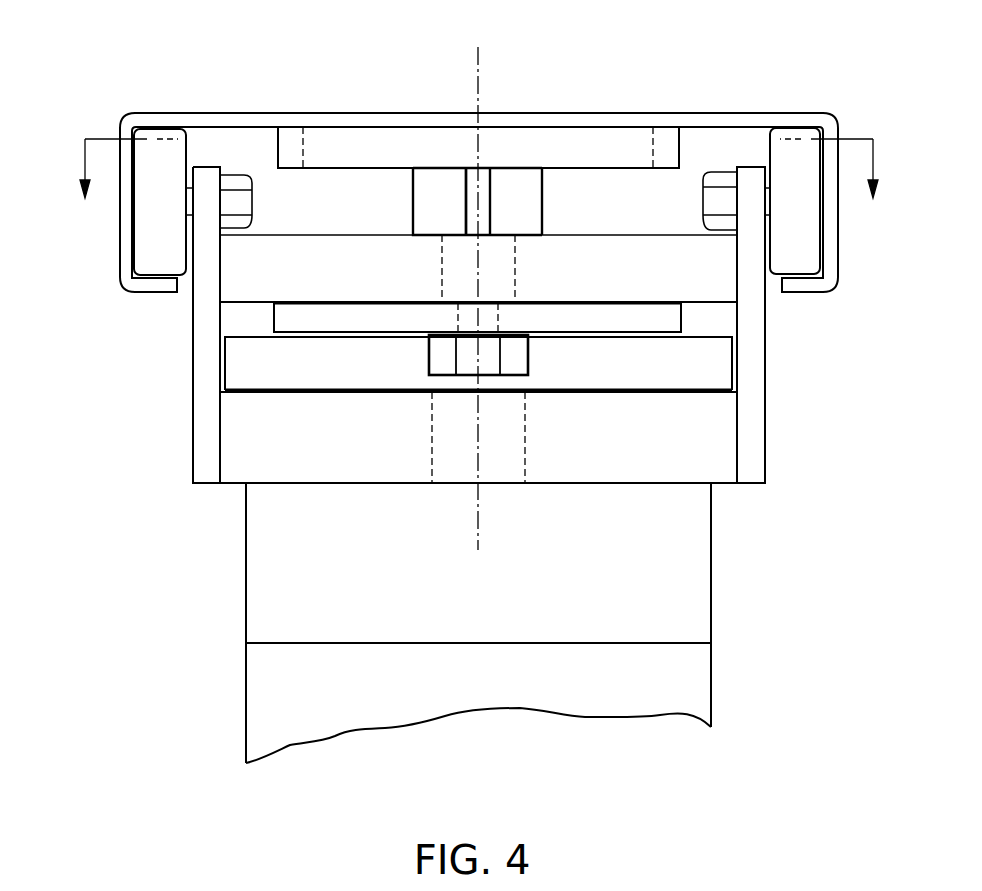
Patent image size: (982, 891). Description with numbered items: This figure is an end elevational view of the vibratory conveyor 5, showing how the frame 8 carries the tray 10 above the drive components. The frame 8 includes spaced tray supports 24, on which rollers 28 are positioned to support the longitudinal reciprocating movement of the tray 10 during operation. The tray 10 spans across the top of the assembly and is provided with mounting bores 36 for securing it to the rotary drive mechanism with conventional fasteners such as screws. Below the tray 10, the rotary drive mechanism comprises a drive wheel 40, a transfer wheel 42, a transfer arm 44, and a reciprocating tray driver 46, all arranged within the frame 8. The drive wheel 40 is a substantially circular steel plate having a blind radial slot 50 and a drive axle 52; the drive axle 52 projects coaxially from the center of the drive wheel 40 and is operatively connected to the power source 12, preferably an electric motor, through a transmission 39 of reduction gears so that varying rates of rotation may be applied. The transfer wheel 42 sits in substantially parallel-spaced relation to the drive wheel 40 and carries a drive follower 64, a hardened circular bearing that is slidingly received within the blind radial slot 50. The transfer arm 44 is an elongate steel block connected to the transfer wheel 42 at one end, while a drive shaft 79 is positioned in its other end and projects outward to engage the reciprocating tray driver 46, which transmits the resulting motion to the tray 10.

The tray 10 is at (363, 116).
The vibratory conveyor 5 is at (479, 147).
The rollers 28 is at (149, 243).
The mounting bores 36 is at (290, 116).
The reciprocating tray driver 46 is at (673, 150).
The tray supports 24 is at (202, 370).
The transfer arm 44 is at (443, 195).
The drive shaft 79 is at (485, 187).
The transfer wheel 42 is at (675, 320).
The drive wheel 40 is at (705, 366).
The drive follower 64 is at (515, 360).
The blind radial slot 50 is at (433, 357).
The drive axle 52 is at (525, 437).
The transmission 39 is at (698, 548).
The power source 12 is at (713, 685).
The frame 8 is at (296, 263).